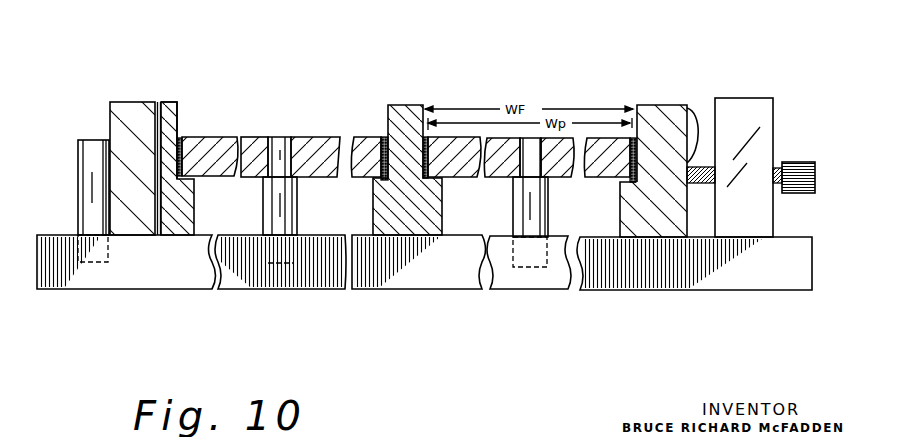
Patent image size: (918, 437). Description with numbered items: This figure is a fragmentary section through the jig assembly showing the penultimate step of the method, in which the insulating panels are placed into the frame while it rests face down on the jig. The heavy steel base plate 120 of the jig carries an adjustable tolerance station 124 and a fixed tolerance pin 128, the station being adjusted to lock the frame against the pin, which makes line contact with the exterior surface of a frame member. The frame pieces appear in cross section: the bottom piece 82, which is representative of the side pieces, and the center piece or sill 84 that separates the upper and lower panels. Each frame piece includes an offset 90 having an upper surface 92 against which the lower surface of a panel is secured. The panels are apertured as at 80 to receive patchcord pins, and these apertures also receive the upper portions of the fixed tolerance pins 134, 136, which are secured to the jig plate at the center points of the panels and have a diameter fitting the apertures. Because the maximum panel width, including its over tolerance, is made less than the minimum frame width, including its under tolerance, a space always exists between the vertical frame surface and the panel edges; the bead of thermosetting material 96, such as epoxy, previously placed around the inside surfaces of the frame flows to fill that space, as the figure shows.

The apertures 80 is at (663, 108).
The bottom piece 82 is at (163, 108).
The center piece or sill 84 is at (400, 105).
The offset 90 is at (184, 205).
The upper surface 92 is at (188, 137).
The thermosetting material 96 is at (183, 137).
The base plate 120 is at (80, 289).
The adjustable tolerance station 124 is at (765, 100).
The fixed tolerance pin 128 is at (77, 150).
The fixed tolerance pin 134 is at (277, 205).
The fixed tolerance pin 136 is at (530, 211).